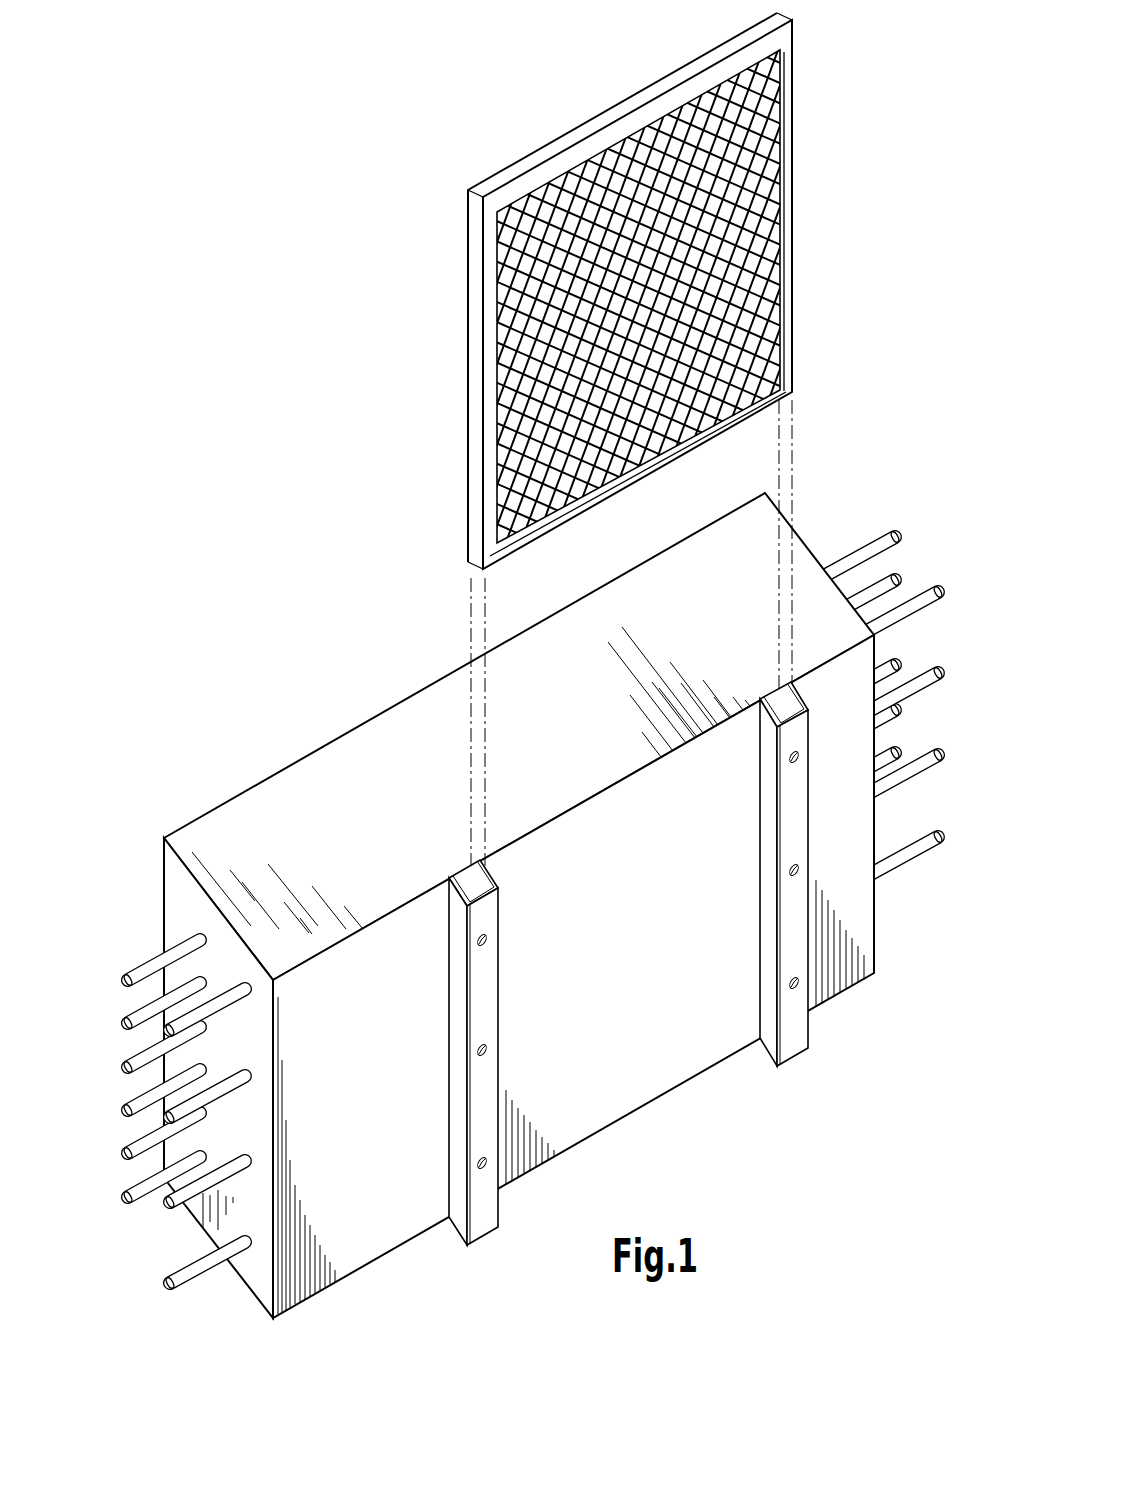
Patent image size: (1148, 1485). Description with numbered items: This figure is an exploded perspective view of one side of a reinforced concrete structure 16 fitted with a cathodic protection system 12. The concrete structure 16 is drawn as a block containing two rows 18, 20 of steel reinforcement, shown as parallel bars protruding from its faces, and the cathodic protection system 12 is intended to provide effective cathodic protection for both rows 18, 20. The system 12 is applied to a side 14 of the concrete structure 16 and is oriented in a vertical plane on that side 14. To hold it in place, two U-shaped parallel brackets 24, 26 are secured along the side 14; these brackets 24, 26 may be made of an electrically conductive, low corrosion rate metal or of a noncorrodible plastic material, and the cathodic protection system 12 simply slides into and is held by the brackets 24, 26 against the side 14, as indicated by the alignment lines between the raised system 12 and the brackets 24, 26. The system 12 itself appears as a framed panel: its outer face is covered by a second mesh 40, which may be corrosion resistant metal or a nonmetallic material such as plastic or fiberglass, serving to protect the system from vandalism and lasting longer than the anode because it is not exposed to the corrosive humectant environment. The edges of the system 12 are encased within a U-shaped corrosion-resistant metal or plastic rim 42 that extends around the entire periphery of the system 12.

The cathodic protection system 12 is at (626, 433).
The side 14 is at (620, 972).
The reinforced concrete structure 16 is at (515, 905).
The row of steel reinforcement 18 is at (233, 1007).
The row of steel reinforcement 20 is at (143, 967).
The U-shaped bracket 24 is at (487, 1113).
The U-shaped bracket 26 is at (793, 952).
The second mesh 40 is at (530, 370).
The rim 42 is at (786, 332).